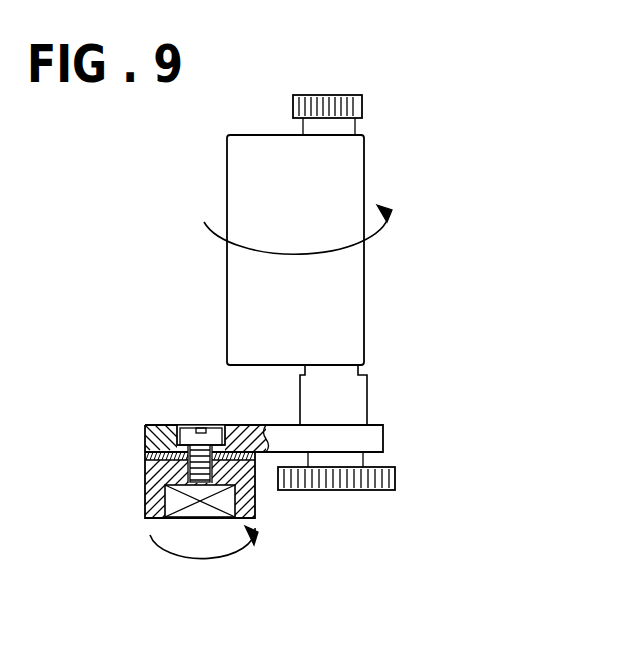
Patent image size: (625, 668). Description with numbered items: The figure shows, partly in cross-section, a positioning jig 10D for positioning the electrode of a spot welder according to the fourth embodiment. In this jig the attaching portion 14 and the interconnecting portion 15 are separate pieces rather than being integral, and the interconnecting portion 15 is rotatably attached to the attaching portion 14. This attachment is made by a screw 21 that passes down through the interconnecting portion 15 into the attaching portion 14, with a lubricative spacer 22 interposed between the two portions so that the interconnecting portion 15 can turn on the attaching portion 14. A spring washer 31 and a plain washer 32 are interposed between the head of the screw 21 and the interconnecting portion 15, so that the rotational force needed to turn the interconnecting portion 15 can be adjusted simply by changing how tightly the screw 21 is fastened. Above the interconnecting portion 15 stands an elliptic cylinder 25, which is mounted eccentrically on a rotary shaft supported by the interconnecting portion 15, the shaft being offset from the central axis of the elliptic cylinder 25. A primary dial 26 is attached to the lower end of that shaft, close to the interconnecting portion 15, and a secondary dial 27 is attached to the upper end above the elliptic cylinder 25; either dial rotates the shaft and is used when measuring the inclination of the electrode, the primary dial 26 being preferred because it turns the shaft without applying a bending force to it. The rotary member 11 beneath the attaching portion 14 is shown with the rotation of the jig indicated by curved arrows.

The positioning jig 10D is at (425, 115).
The secondary dial 27 is at (362, 105).
The elliptic cylinder 25 is at (337, 193).
The interconnecting portion 15 is at (365, 438).
The primary dial 26 is at (383, 478).
The spring washer 31 is at (162, 427).
The plain washer 32 is at (147, 428).
The lubricative spacer 22 is at (150, 457).
The attaching portion 14 is at (147, 502).
The screw 21 is at (200, 426).
The motor / rotary member 11 is at (208, 513).